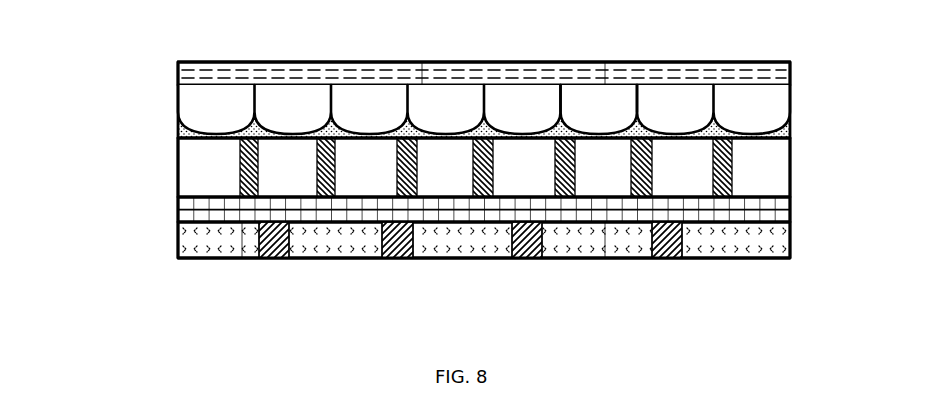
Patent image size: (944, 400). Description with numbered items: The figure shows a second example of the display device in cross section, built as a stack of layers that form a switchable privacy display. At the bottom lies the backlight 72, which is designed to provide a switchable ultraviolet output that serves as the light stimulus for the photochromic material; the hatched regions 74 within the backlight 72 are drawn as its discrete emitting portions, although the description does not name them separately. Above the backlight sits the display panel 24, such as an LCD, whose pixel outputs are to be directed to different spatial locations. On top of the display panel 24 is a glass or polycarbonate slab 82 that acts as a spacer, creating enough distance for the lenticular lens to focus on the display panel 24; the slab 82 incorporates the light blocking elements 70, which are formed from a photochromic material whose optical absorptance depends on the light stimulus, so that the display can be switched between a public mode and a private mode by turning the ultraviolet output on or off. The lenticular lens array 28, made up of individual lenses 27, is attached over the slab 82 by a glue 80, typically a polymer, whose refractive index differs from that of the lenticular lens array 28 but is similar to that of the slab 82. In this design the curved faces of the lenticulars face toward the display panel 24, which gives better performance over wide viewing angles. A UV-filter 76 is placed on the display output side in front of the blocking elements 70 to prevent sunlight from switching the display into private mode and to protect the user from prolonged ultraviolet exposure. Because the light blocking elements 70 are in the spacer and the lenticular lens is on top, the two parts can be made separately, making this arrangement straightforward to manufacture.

The display panel 24 is at (176, 208).
The lens 27 is at (592, 115).
The lenticular lens array 28 is at (802, 108).
The light blocking elements 70 is at (247, 128).
The backlight 72 is at (176, 238).
The light emitting elements 74 is at (273, 259).
The UV-filter 76 is at (710, 73).
The glue 80 is at (641, 130).
The slab 82 is at (520, 167).